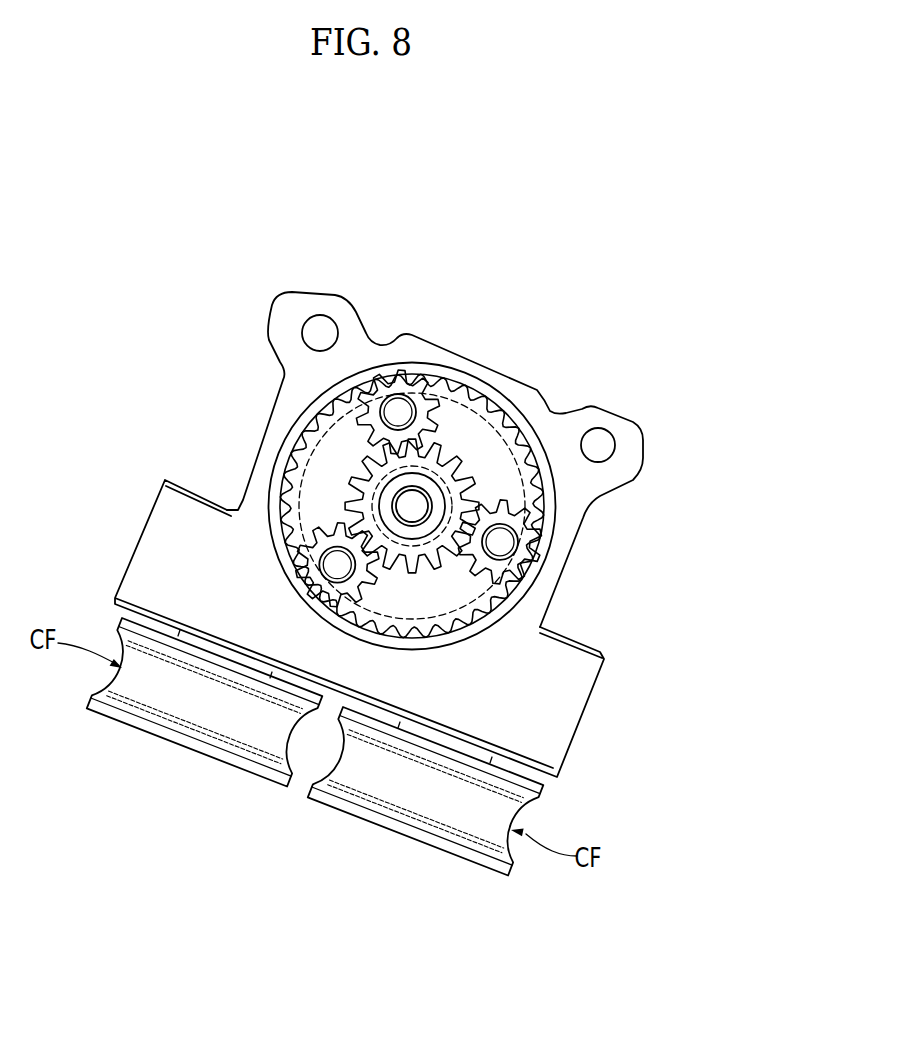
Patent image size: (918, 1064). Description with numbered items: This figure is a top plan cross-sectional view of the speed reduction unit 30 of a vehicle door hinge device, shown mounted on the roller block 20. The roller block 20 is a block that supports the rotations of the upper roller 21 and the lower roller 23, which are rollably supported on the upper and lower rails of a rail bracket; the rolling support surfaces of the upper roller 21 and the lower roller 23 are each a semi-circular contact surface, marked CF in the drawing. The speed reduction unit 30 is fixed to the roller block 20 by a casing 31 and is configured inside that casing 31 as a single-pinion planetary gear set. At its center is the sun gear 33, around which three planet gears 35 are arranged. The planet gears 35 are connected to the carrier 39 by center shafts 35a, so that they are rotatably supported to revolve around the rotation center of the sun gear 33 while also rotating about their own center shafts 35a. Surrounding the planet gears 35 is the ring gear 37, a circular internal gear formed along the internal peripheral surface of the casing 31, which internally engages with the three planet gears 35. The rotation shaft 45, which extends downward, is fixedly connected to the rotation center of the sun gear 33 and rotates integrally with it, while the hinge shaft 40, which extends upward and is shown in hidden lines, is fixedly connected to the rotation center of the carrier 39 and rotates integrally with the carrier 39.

The roller block 20 is at (557, 713).
The upper roller 21 is at (197, 708).
The lower roller 23 is at (416, 789).
The speed reduction unit 30 is at (244, 387).
The casing 31 is at (490, 373).
The sun gear 33 is at (450, 473).
The planet gears 35 is at (422, 396).
The center shafts 35a is at (398, 405).
The ring gear 37 is at (540, 457).
The carrier 39 is at (640, 493).
The hinge shaft 40 is at (373, 497).
The rotation shaft 45 is at (410, 505).